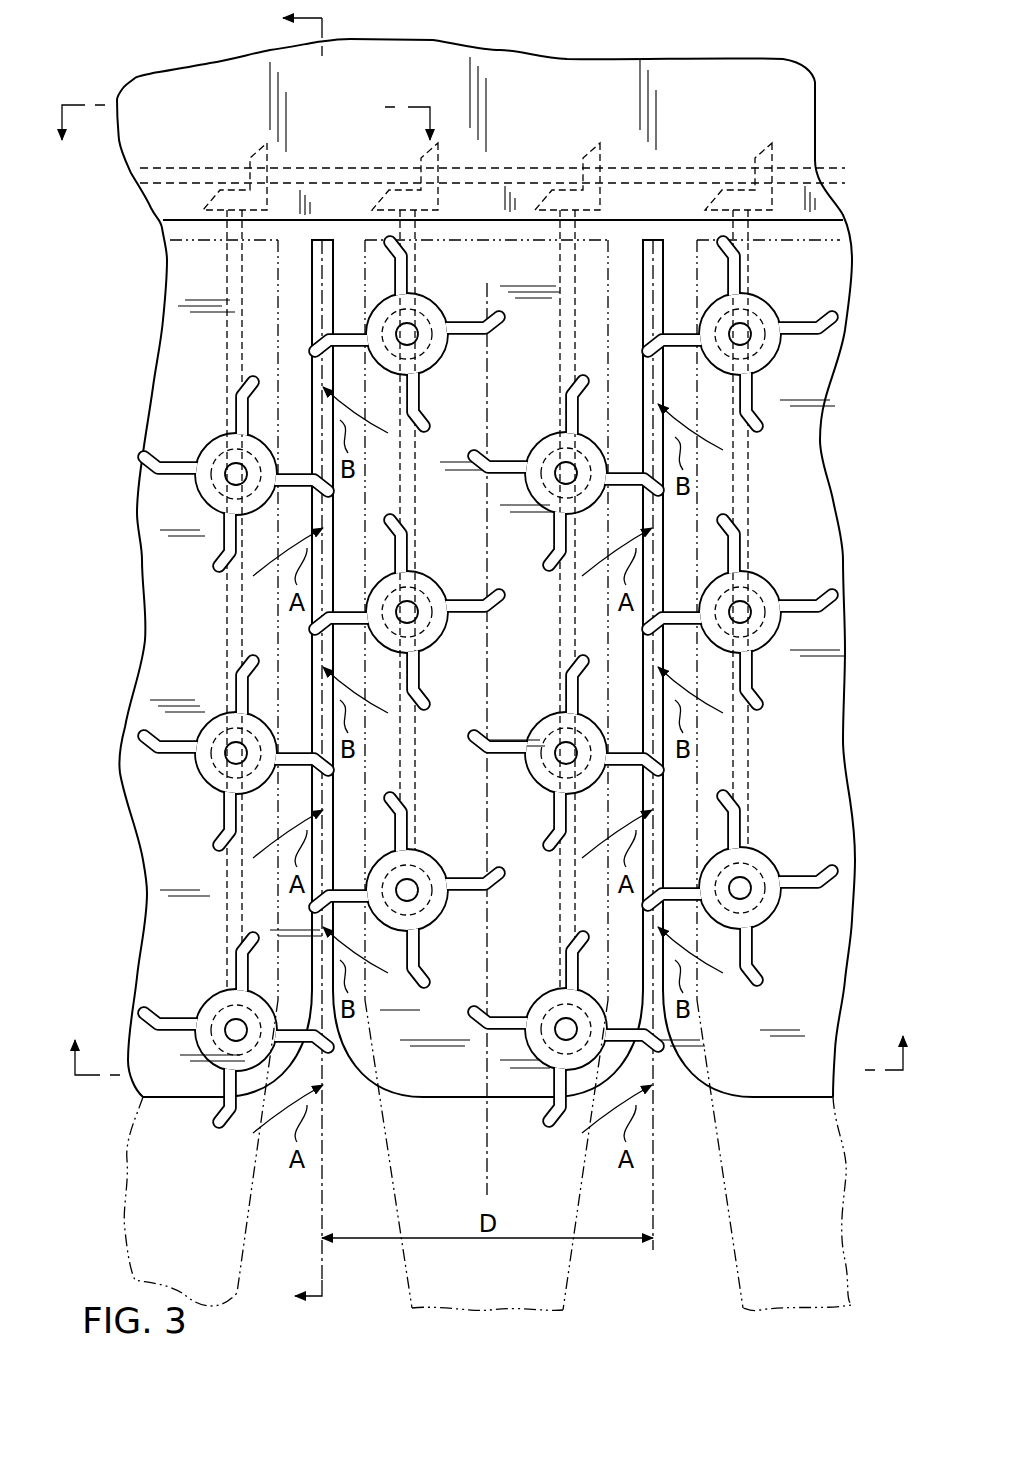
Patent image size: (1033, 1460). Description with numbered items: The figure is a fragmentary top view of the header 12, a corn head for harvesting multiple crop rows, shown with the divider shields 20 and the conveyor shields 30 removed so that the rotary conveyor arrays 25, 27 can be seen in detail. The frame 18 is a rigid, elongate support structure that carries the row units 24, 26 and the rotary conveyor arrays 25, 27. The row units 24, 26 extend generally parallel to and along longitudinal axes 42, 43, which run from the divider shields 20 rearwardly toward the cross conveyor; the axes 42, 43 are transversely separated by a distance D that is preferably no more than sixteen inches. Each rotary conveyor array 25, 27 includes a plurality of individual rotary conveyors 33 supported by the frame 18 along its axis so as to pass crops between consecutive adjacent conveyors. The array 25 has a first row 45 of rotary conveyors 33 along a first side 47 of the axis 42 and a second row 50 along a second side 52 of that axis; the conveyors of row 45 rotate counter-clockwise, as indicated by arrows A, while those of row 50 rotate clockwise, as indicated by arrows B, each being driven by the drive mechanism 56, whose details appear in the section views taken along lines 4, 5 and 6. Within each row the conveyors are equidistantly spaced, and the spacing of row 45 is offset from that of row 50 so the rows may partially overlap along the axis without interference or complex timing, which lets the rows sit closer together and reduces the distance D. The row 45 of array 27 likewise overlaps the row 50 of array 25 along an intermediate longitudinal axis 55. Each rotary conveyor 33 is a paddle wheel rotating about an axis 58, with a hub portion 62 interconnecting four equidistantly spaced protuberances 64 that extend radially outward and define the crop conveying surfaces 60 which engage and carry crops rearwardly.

The header 12 is at (125, 82).
The frame 18 is at (805, 88).
The divider shields 20 is at (390, 1172).
The row unit 24 is at (342, 1056).
The rotary conveyor array 25 is at (195, 645).
The row unit 26 is at (676, 1063).
The rotary conveyor array 27 is at (783, 441).
The conveyor shields 30 is at (182, 243).
The rotary conveyor 33 is at (200, 446).
The longitudinal axis 42 is at (322, 1215).
The longitudinal axis 43 is at (655, 1234).
The first row 45 is at (215, 421).
The first side 47 is at (311, 287).
The second row 50 is at (436, 293).
The second side 52 is at (335, 273).
The longitudinal axis 55 is at (487, 1157).
The drive mechanism 56 is at (228, 163).
The axis 58 is at (743, 891).
The crop conveying surface 60 is at (752, 968).
The hub portion 62 is at (775, 860).
The protuberances 64 is at (727, 790).
The section line 4- 4 is at (312, 661).
The section line 5- 5 is at (488, 1041).
The section line 6- 6 is at (246, 128).